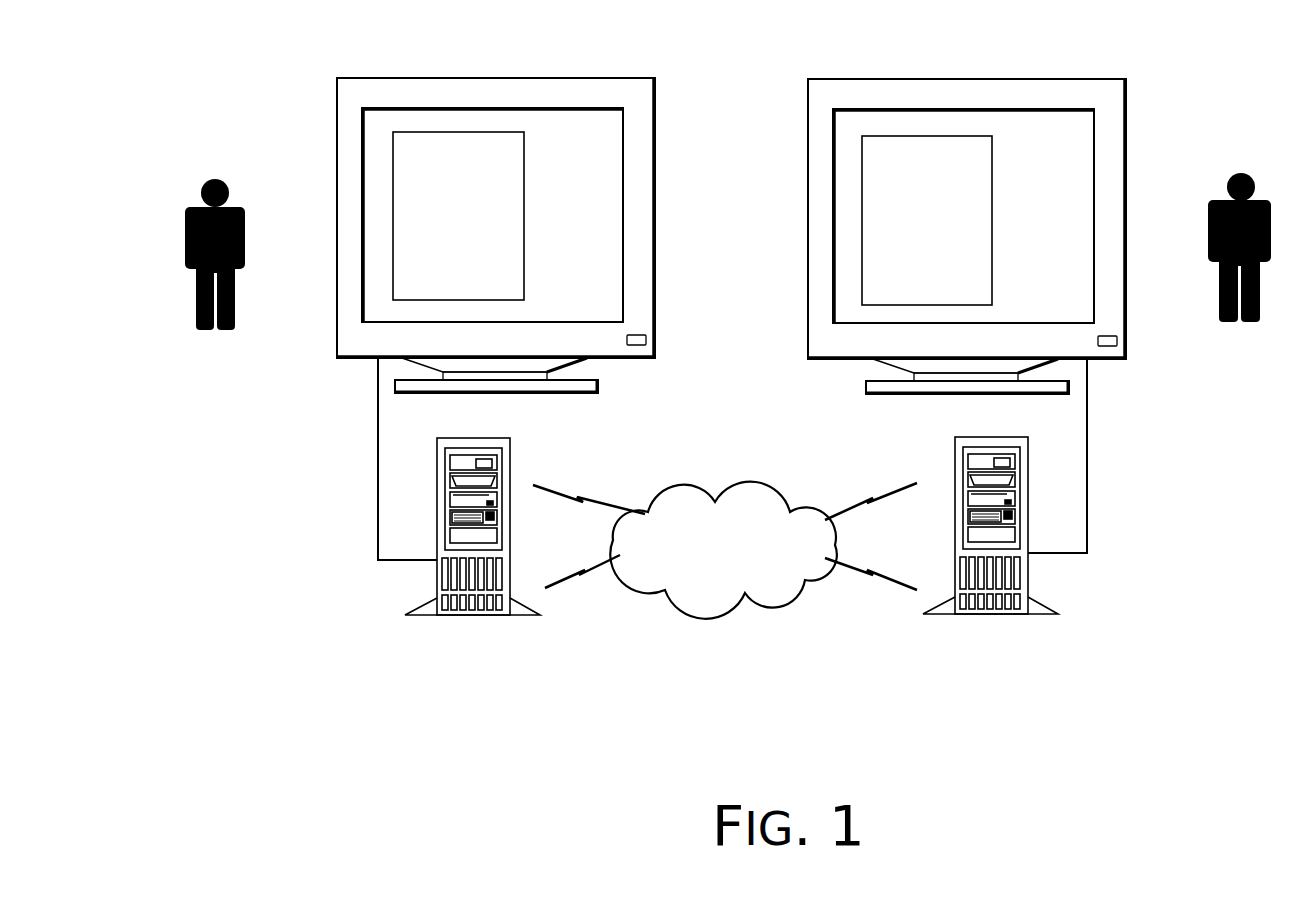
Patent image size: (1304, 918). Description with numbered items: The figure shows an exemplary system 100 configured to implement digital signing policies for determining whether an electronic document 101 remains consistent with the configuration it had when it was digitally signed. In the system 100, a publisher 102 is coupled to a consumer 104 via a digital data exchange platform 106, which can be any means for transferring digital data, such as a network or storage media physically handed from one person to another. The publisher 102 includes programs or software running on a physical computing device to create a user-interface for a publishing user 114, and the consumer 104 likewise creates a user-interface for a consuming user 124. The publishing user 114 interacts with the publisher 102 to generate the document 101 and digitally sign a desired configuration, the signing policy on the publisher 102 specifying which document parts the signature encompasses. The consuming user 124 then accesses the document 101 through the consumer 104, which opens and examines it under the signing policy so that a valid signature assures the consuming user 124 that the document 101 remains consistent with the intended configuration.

The system 100 is at (251, 58).
The electronic document 101 is at (528, 181).
The publisher 102 is at (496, 324).
The consumer 104 is at (967, 324).
The digital data exchange platform 106 is at (725, 550).
The publishing user 114 is at (234, 277).
The consuming user 124 is at (1240, 277).